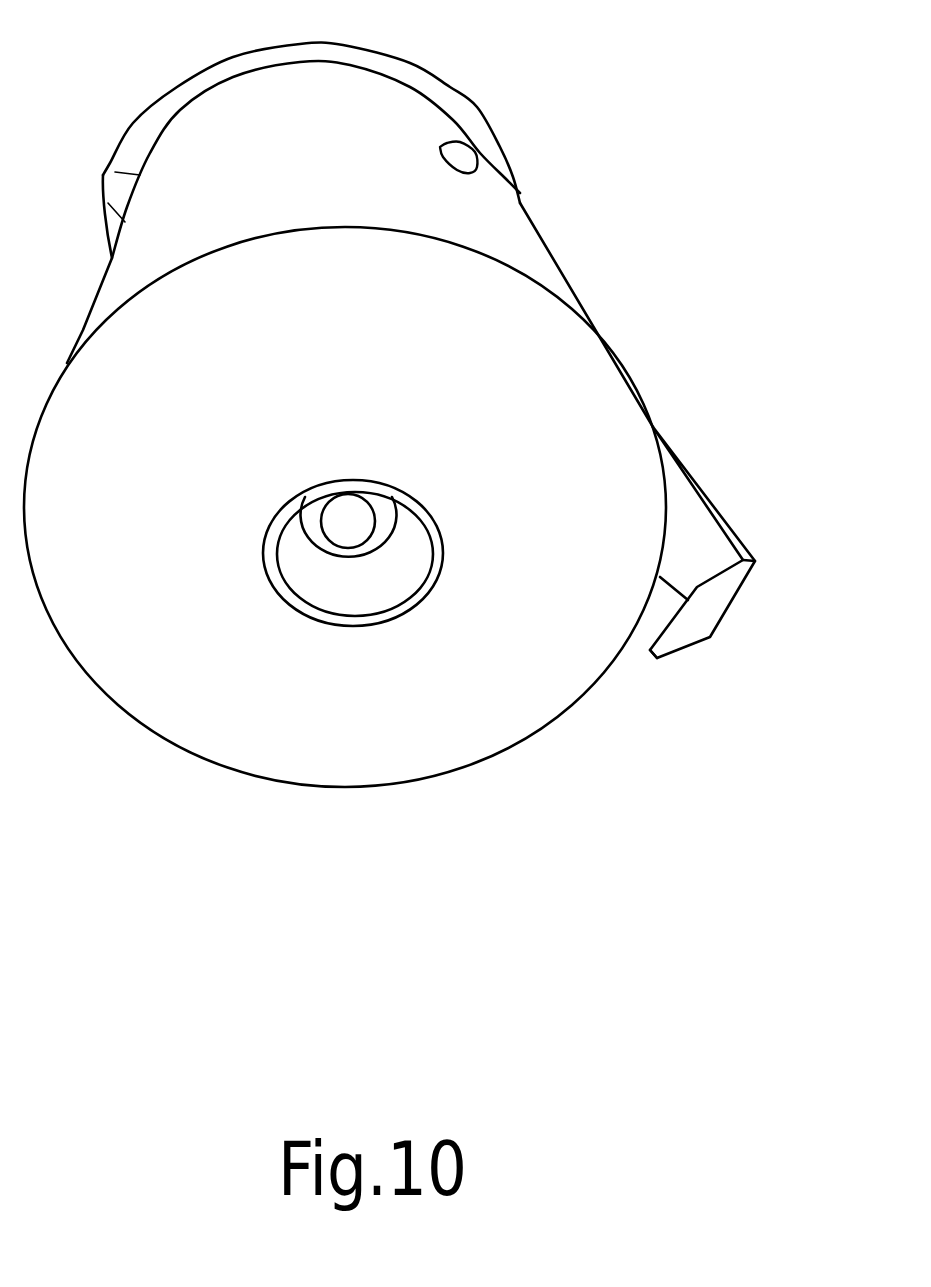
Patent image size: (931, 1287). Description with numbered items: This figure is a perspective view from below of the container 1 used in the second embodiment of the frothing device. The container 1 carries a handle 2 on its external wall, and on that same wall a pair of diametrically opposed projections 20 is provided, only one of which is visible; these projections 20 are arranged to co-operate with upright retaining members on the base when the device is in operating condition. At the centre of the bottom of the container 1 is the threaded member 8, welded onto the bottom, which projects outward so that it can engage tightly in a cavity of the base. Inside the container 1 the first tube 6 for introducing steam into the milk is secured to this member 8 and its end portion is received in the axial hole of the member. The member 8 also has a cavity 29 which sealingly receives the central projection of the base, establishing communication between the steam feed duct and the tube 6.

The container 1 is at (497, 708).
The handle 2 is at (707, 547).
The first tube 6 is at (350, 522).
The threaded member 8 is at (433, 553).
The projections 20 is at (461, 153).
The cavity 29 is at (360, 602).